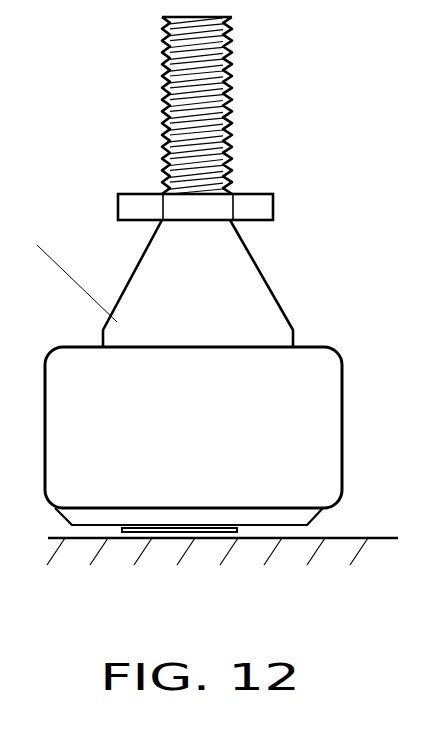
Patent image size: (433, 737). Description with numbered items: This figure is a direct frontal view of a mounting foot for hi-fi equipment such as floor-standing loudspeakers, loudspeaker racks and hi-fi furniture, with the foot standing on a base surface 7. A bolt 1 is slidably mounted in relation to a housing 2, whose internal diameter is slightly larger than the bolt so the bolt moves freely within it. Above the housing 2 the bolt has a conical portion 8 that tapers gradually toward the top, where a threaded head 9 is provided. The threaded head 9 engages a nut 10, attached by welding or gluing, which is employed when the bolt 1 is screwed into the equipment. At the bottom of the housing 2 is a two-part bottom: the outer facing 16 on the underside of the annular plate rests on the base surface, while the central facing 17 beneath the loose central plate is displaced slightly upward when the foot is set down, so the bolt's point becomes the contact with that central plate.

The bolt 1 is at (67, 273).
The housing 2 is at (267, 418).
The floor 7 is at (123, 558).
The conical portion of bolt 8 is at (293, 292).
The threaded head 9 is at (197, 92).
The nut 10 is at (203, 208).
The facing 16 is at (208, 515).
The facing 17 is at (180, 528).